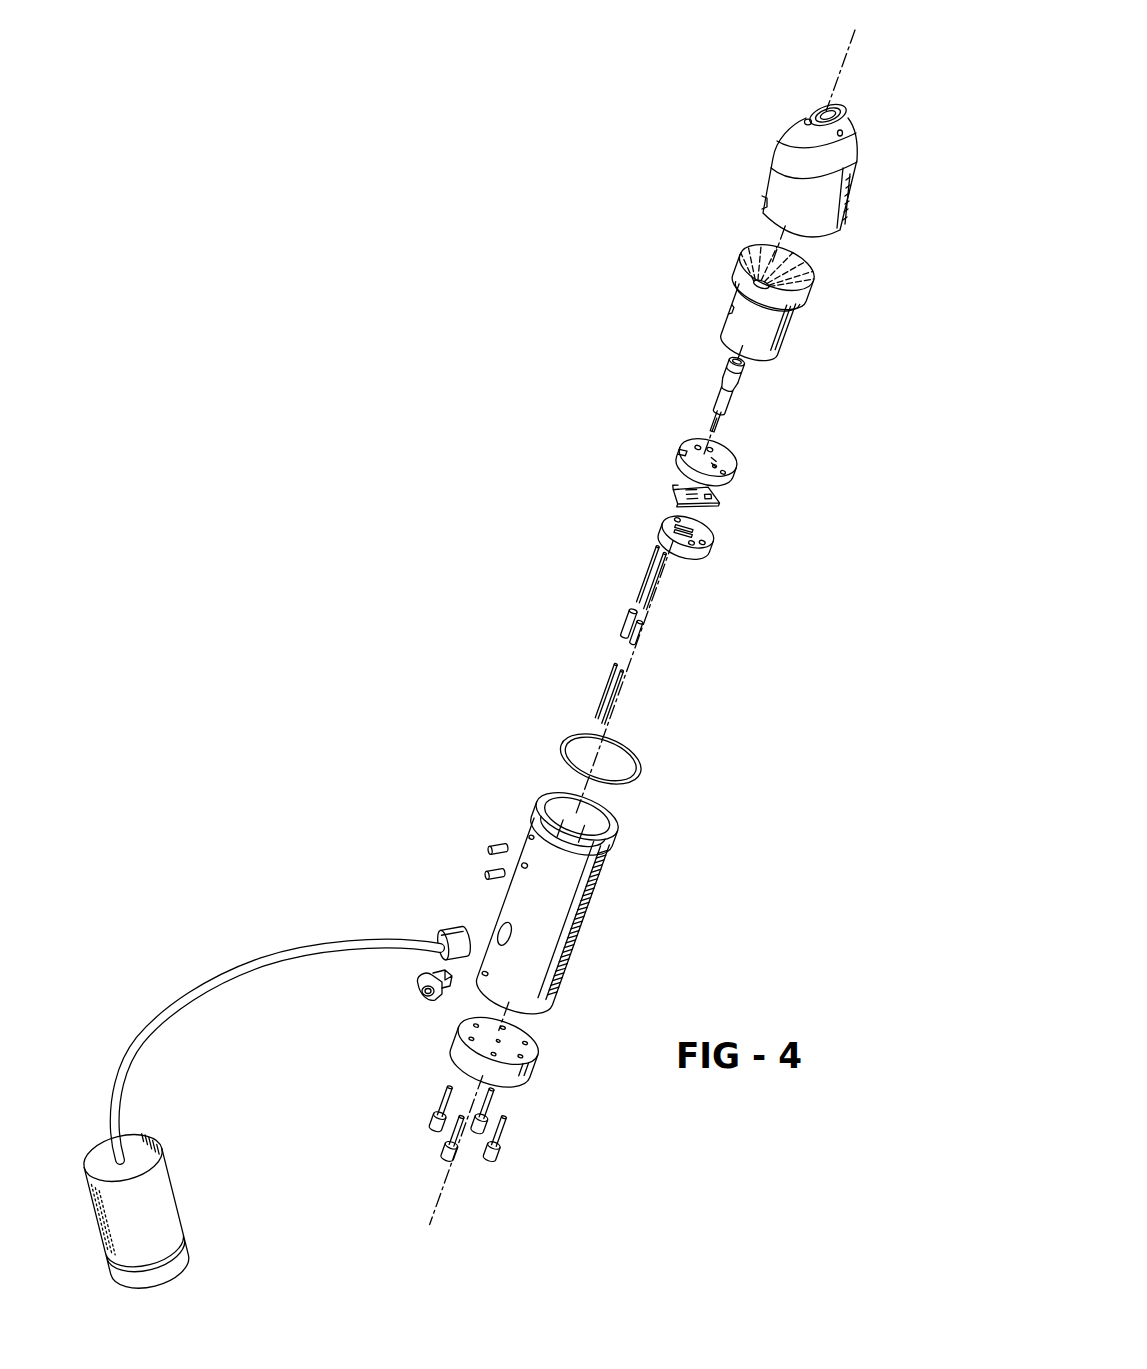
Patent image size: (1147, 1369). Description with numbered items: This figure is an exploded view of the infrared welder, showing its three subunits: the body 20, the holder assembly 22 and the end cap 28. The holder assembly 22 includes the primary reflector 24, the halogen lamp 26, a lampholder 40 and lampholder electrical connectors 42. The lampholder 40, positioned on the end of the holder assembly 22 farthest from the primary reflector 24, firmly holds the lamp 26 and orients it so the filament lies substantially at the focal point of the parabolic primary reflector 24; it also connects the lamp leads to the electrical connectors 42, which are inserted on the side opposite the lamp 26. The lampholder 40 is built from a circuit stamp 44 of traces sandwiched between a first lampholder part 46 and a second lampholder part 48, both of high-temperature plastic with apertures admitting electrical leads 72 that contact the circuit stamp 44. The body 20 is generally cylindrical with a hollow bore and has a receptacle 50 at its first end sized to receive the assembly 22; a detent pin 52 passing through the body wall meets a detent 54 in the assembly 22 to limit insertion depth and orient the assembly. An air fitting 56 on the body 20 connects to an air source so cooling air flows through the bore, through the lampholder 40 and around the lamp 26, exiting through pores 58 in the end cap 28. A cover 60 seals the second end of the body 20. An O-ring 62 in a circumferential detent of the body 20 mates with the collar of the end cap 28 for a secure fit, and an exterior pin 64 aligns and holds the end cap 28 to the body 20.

The body 20 is at (549, 800).
The holder assembly 22 is at (827, 280).
The primary reflector 24 is at (750, 257).
The halogen lamp 26 is at (724, 388).
The end cap 28 is at (762, 180).
The lampholder 40 is at (616, 403).
The lampholder electrical connectors 42 is at (641, 577).
The circuit stamp 44 is at (670, 489).
The first lampholder part 46 is at (684, 448).
The second lampholder part 48 is at (663, 528).
The receptacle 50 is at (584, 825).
The detent pin 52 is at (484, 868).
The detent 54 is at (733, 323).
The air fitting 56 is at (423, 975).
The pores 58 is at (805, 119).
The cover 60 is at (535, 1072).
The O-ring 62 is at (571, 748).
The pin 64 is at (488, 846).
The electrical leads 72 is at (614, 702).